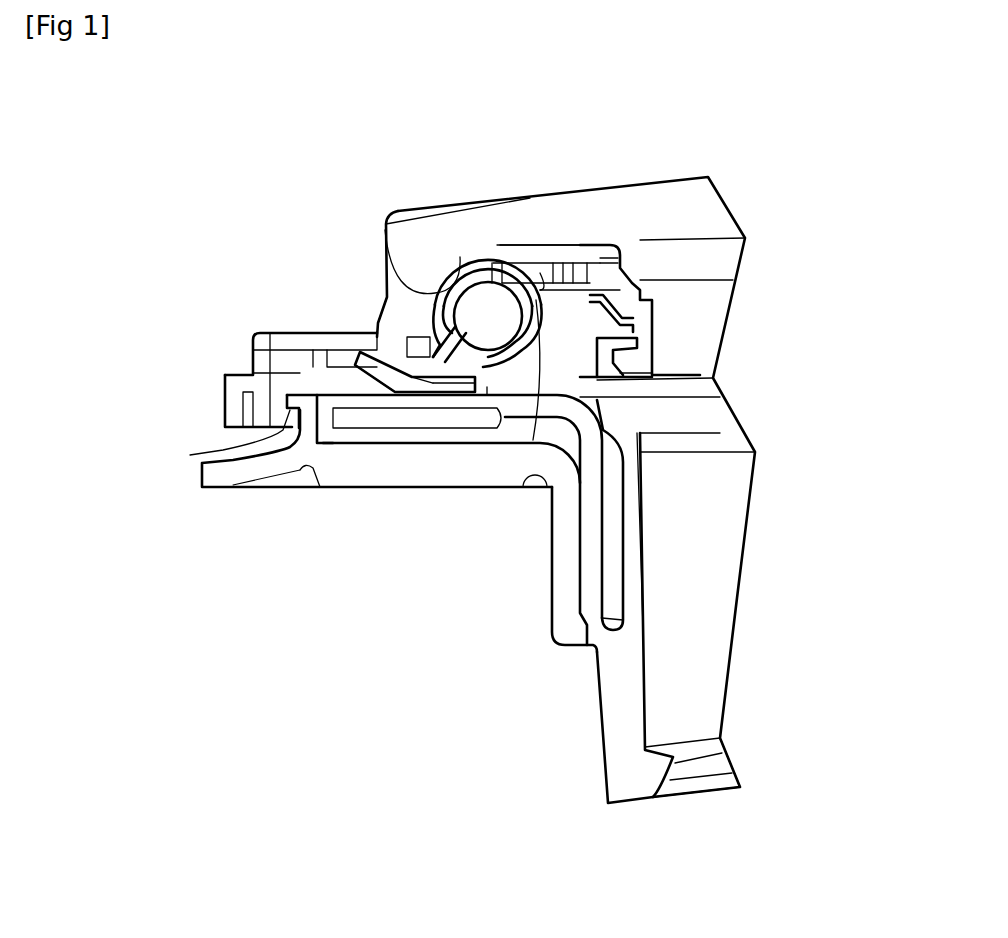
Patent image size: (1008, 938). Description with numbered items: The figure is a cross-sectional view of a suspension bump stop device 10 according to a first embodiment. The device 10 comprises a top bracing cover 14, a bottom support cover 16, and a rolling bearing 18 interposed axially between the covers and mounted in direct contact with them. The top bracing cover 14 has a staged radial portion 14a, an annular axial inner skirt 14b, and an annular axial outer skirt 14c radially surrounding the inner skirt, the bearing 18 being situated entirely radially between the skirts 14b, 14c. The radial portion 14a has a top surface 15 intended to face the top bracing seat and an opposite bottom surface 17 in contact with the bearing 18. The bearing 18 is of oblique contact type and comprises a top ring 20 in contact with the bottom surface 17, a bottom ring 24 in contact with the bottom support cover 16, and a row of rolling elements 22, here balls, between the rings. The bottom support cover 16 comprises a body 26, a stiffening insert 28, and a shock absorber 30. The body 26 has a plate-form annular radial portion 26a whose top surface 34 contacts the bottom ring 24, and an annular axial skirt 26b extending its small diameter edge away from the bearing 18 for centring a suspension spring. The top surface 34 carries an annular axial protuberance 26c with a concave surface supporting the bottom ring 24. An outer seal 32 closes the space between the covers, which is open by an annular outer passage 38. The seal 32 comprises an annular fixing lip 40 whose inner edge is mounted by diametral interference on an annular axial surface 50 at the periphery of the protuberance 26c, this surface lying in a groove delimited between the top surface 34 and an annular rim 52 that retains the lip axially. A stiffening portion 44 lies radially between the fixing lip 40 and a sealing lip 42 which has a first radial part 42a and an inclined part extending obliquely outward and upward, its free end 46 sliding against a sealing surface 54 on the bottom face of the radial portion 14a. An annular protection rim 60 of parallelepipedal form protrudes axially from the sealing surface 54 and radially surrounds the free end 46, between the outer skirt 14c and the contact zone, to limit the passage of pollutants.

The bump stop device 10 is at (772, 252).
The top bracing cover 14 is at (727, 197).
The radial portion 14a is at (605, 238).
The annular axial inner skirt 14b is at (640, 265).
The annular axial outer skirt 14c is at (223, 400).
The top surface 15 is at (413, 210).
The bottom support cover 16 is at (730, 802).
The bottom surface 17 is at (377, 260).
The rolling bearing 18 is at (428, 122).
The top ring 20 is at (458, 258).
The rolling elements 22 is at (498, 295).
The bottom ring 24 is at (553, 280).
The body 26 is at (648, 677).
The annular radial portion 26a is at (283, 378).
The annular axial skirt 26b is at (647, 613).
The annular axial protuberance 26c is at (652, 300).
The stiffening insert 28 is at (640, 550).
The shock absorber 30 is at (550, 622).
The outer seal 32 is at (303, 550).
The top surface 34 is at (580, 383).
The annular outer passage 38 is at (283, 438).
The annular fixing lip 40 is at (457, 395).
The sealing lip 42 is at (393, 395).
The first radial part 42a is at (407, 400).
The stiffening portion 44 is at (427, 400).
The free end 46 is at (340, 352).
The annular axial surface 50 is at (503, 487).
The annular rim 52 is at (535, 477).
The sealing surface 54 is at (383, 357).
The annular protection rim 60 is at (295, 360).